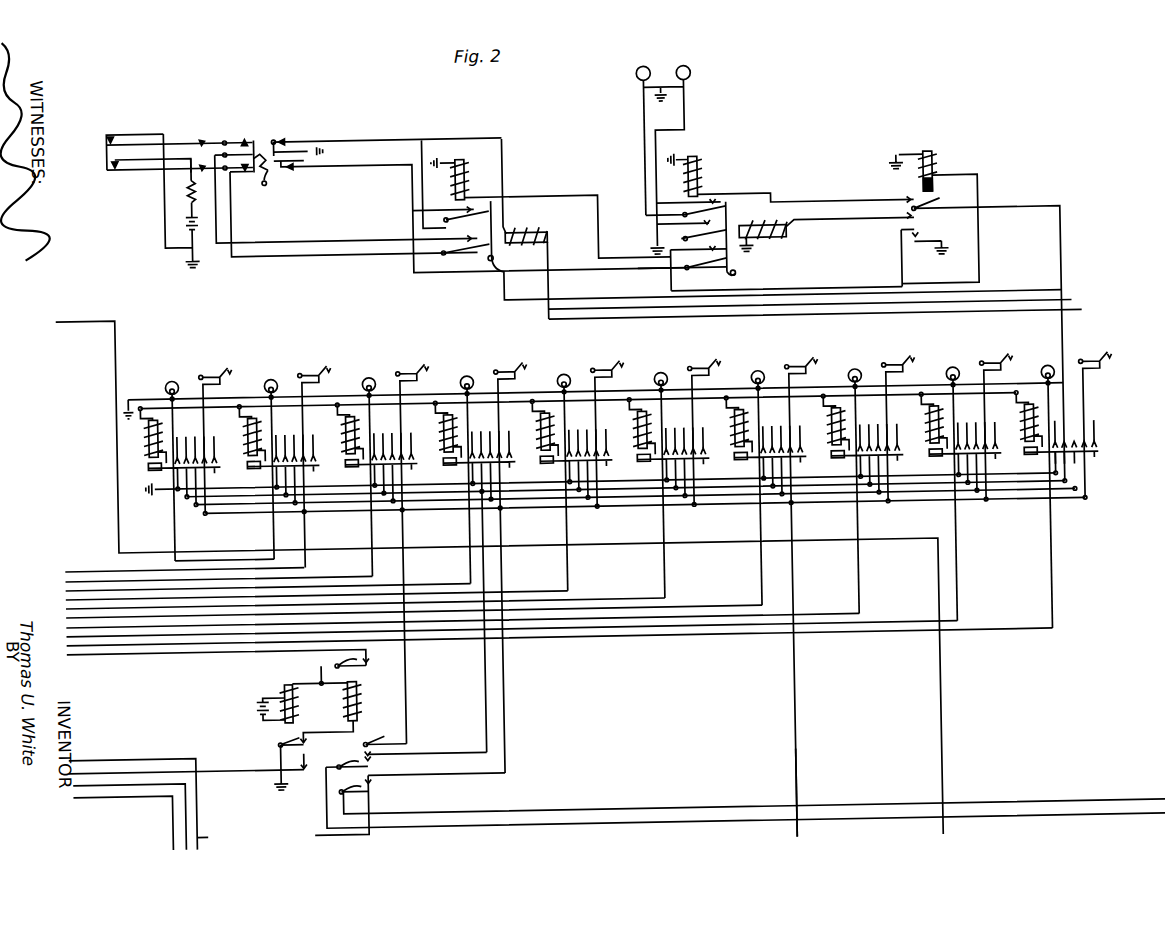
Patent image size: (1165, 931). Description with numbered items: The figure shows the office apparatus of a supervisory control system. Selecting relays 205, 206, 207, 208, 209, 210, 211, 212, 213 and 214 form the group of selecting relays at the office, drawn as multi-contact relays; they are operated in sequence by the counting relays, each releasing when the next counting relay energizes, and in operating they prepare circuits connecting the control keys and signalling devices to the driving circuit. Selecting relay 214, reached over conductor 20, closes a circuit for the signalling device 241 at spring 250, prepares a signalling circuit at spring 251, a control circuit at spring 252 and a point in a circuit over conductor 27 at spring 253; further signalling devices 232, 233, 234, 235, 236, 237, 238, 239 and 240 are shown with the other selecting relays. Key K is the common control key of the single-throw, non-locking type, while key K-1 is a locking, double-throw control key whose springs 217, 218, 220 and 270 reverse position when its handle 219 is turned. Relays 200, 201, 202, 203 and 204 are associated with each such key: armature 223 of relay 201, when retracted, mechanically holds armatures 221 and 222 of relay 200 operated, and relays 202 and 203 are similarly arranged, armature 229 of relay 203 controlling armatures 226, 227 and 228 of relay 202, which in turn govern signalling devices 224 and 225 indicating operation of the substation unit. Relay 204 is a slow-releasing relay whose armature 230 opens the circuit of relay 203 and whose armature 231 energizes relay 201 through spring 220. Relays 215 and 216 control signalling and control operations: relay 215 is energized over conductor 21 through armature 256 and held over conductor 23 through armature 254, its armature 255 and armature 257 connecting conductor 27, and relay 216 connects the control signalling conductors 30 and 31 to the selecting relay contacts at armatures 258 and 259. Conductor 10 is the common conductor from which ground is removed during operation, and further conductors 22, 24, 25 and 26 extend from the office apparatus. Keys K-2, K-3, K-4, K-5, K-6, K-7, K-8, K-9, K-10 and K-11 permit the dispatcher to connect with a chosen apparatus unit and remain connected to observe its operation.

The conductor 10 is at (100, 320).
The conductor 20 is at (104, 655).
The conductor 21 is at (164, 655).
The conductor 22 is at (214, 839).
The conductor 23 is at (119, 765).
The conductor 24 is at (88, 786).
The conductor 25 is at (140, 798).
The conductor 26 is at (328, 810).
The conductor 27 is at (789, 800).
The trunk conductor 30 is at (1115, 815).
The conductor 31 is at (1045, 796).
The common control key K is at (159, 152).
The control key K-1 is at (262, 142).
The key K-2 is at (217, 370).
The key K-3 is at (316, 370).
The key K-4 is at (414, 370).
The key K-5 is at (512, 370).
The key K-6 is at (609, 370).
The key K-7 is at (706, 370).
The key K-8 is at (803, 370).
The key K-9 is at (900, 370).
The key K-10 is at (998, 370).
The key K-11 is at (1097, 370).
The relay 200 is at (466, 165).
The relay 201 is at (533, 239).
The relay 202 is at (703, 181).
The signalling relay 203 is at (792, 250).
The slow-releasing relay 204 is at (938, 165).
The selecting relay 205 is at (146, 440).
The selecting relay 206 is at (249, 440).
The selecting relay 207 is at (347, 440).
The selecting relay 208 is at (445, 440).
The selecting relay 209 is at (542, 440).
The selecting relay 210 is at (639, 440).
The selecting relay 211 is at (736, 440).
The selecting relay 212 is at (833, 440).
The selecting relay 213 is at (931, 440).
The selecting relay 214 is at (1026, 440).
The relay 215 is at (279, 690).
The relay 216 is at (342, 704).
The spring 217 is at (232, 143).
The spring 218 is at (229, 170).
The handle 219 is at (268, 188).
The spring 220 is at (298, 153).
The armature 221 is at (440, 224).
The armature 222 is at (440, 247).
The armature 223 is at (493, 267).
The signalling lamp 224 is at (646, 75).
The signalling device 225 is at (691, 75).
The armature 226 is at (686, 224).
The armature 227 is at (684, 247).
The armature 228 is at (681, 278).
The armature 229 is at (731, 285).
The armature 230 is at (934, 216).
The armature 231 is at (937, 237).
The signal lamp 232 is at (172, 381).
The signal lamp 233 is at (271, 381).
The signal lamp 234 is at (369, 381).
The signal lamp 235 is at (467, 381).
The signal lamp 236 is at (564, 381).
The signal lamp 237 is at (661, 381).
The signal lamp 238 is at (758, 381).
The signal lamp 239 is at (855, 381).
The signal lamp 240 is at (953, 381).
The signalling device 241 is at (1048, 381).
The spring 250 is at (1056, 460).
The spring 251 is at (1065, 463).
The spring 252 is at (1077, 470).
The spring 253 is at (1090, 471).
The armature 254 is at (274, 746).
The armature 255 is at (274, 784).
The armature 256 is at (331, 668).
The armature 257 is at (372, 737).
The armature 258 is at (362, 770).
The armature 259 is at (363, 794).
The spring 270 is at (292, 172).